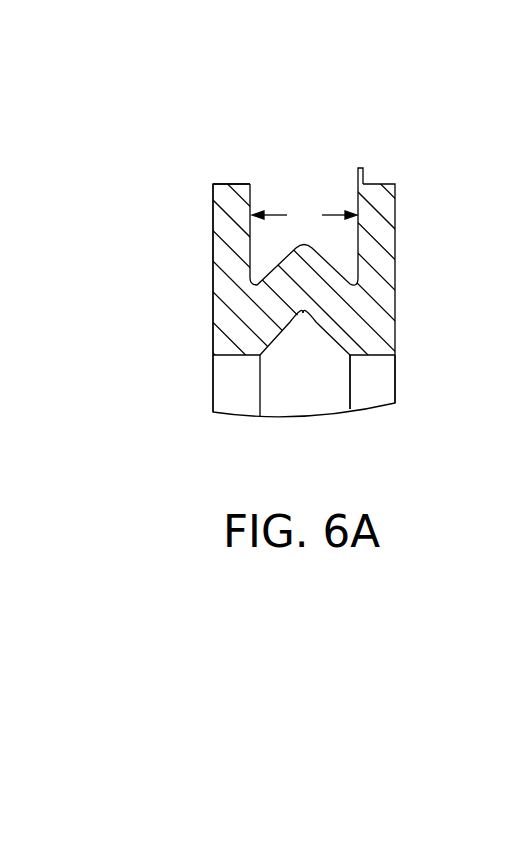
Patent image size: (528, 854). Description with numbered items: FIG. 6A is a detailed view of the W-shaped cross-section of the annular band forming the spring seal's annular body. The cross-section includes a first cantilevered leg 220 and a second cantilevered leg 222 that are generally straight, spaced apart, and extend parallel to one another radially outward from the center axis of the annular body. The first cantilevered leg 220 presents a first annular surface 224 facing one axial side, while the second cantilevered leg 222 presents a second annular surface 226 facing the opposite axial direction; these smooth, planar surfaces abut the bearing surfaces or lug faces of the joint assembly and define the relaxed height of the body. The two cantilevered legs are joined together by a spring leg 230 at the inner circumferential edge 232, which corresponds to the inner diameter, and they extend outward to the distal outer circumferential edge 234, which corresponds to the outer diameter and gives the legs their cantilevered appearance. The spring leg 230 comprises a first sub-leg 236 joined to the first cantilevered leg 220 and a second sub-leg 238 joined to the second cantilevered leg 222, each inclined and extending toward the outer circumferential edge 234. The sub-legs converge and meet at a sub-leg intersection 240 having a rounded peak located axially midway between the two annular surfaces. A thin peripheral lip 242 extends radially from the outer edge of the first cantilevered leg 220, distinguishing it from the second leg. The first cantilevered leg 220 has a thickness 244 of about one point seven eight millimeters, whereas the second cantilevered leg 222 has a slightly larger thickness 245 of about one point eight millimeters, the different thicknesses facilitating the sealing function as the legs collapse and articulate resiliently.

The first cantilevered leg 220 is at (380, 205).
The second cantilevered leg 222 is at (228, 206).
The first annular surface 224 is at (407, 243).
The second annular surface 226 is at (201, 251).
The spring leg 230 is at (332, 285).
The inner circumferential edge 232 is at (378, 389).
The outer circumferential edge 234 is at (230, 174).
The first sub-leg 236 is at (352, 318).
The second sub-leg 238 is at (272, 308).
The sub-leg intersection 240 is at (312, 231).
The peripheral lip 242 is at (361, 170).
The thickness of first cantilevered leg 244 is at (407, 215).
The thickness of second cantilevered leg 245 is at (201, 215).